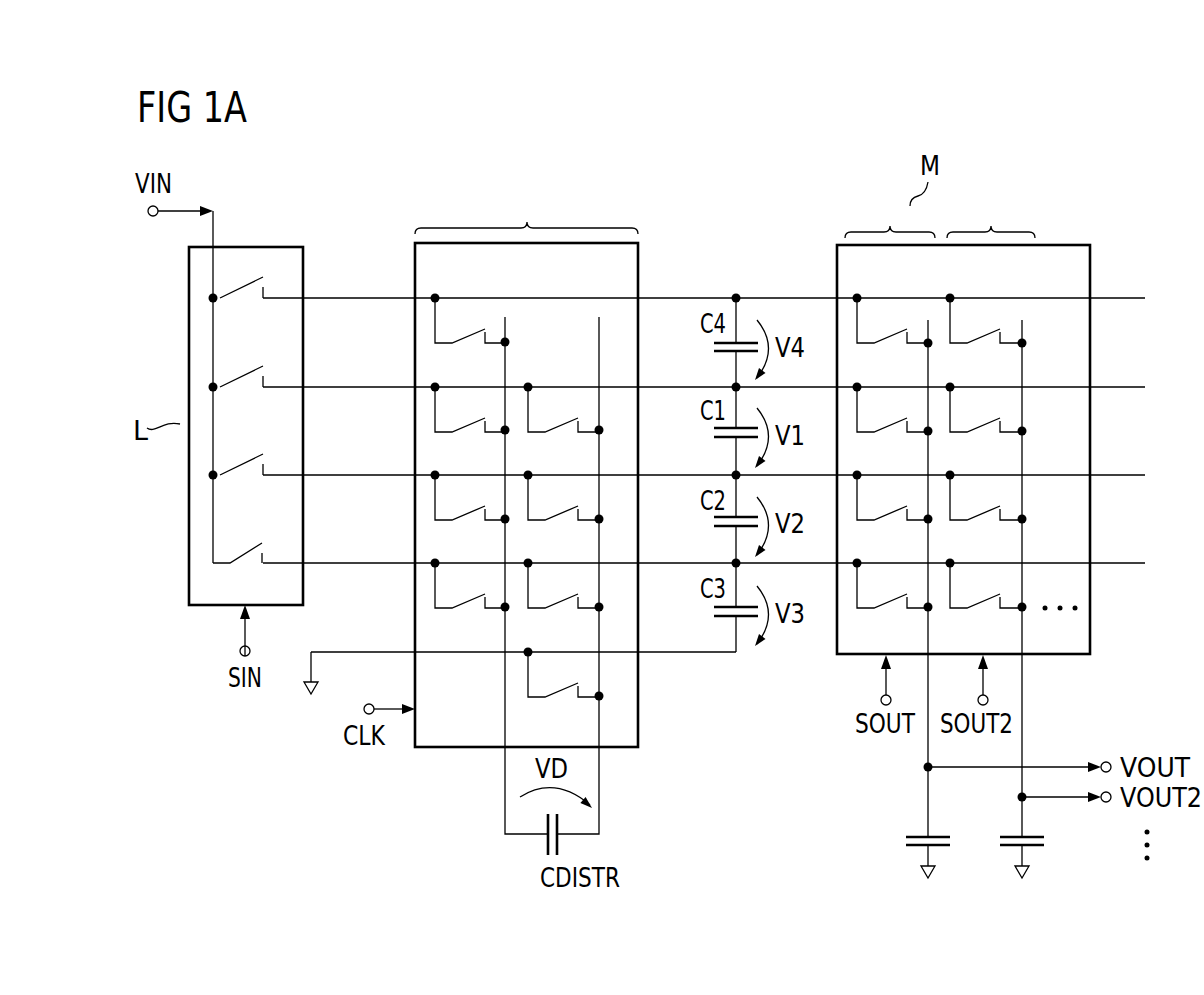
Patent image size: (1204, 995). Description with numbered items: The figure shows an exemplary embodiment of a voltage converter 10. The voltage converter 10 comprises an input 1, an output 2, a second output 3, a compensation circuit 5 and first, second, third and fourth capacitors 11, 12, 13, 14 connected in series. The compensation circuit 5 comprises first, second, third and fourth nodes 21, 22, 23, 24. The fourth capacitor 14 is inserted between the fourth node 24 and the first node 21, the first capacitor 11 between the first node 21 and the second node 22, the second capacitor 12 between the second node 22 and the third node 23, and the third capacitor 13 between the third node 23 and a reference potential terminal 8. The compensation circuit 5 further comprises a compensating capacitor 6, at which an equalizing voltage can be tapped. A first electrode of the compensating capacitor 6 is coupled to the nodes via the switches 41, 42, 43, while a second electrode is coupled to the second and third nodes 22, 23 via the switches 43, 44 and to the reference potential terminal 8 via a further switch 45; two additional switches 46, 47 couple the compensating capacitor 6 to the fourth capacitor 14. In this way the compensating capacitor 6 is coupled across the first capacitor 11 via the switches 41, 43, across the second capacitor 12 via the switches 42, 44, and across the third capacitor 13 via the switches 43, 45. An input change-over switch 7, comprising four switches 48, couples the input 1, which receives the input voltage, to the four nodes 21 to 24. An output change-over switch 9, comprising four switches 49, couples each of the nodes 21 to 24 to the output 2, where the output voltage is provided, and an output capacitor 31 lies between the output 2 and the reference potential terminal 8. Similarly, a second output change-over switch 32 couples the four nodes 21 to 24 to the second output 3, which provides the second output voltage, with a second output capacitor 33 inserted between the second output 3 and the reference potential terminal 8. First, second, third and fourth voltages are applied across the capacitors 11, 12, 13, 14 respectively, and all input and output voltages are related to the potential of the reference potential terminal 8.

The input 1 is at (153, 218).
The output 2 is at (1108, 762).
The second output 3 is at (1106, 803).
The compensation circuit 5 is at (526, 468).
The compensating capacitor 6 is at (547, 840).
The input change-over switch 7 is at (258, 247).
The reference potential terminal 8 is at (311, 696).
The output change-over switch 9 is at (890, 215).
The voltage converter 10 is at (1045, 178).
The first capacitor 11 is at (712, 435).
The second capacitor 12 is at (712, 524).
The third capacitor 13 is at (712, 614).
The fourth capacitor 14 is at (712, 348).
The first node 21 is at (435, 387).
The second node 22 is at (435, 475).
The third node 23 is at (435, 563).
The fourth node 24 is at (435, 298).
The output capacitor 31 is at (918, 848).
The second output change-over switch 32 is at (991, 215).
The second output capacitor 33 is at (1012, 848).
The switch 41 is at (465, 428).
The switch 42 is at (465, 516).
The switch 43 is at (465, 604).
The switch 44 is at (558, 604).
The further switch 45 is at (558, 693).
The additional switch 46 is at (465, 340).
The additional switch 47 is at (558, 428).
The switch 48 is at (245, 300).
The switch 49 is at (890, 340).